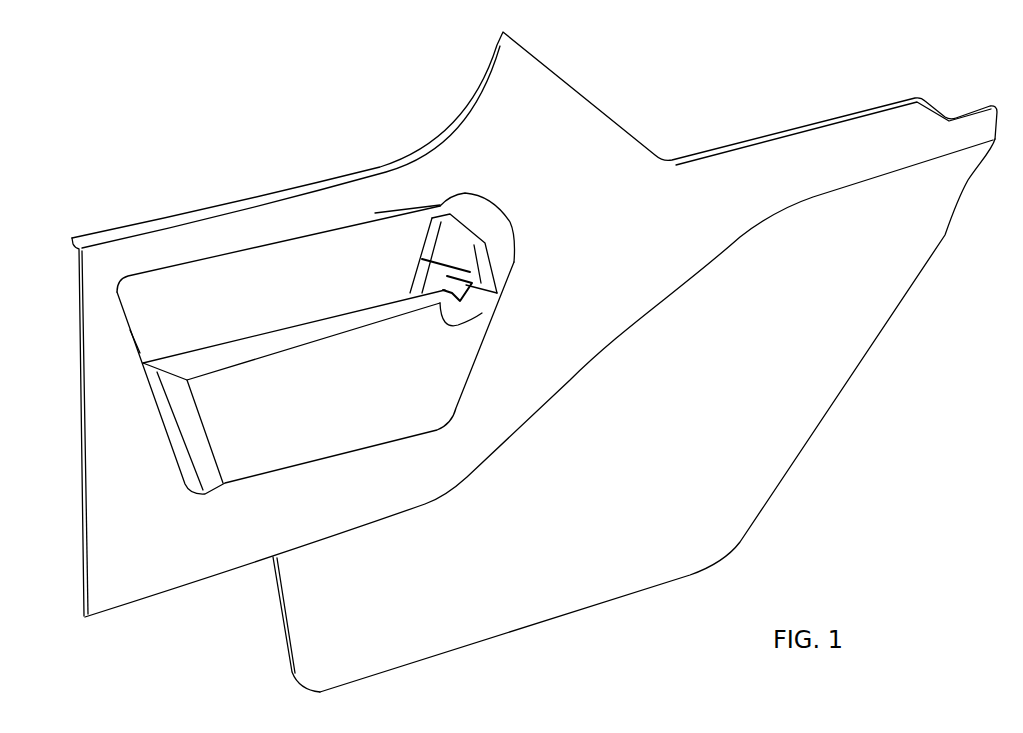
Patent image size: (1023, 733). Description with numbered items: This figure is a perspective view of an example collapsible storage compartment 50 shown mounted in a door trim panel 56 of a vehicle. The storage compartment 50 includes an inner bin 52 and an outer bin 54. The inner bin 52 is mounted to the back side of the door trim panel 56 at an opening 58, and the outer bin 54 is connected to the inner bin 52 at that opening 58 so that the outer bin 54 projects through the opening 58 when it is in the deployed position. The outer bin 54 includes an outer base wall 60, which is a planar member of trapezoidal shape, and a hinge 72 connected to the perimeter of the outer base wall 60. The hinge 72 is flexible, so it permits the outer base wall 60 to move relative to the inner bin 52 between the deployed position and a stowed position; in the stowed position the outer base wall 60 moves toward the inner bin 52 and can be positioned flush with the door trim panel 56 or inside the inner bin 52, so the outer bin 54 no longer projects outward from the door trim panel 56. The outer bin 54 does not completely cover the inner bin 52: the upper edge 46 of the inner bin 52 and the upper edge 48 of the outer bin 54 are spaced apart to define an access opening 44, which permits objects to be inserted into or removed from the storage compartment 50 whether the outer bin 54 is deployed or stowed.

The access opening 44 is at (325, 265).
The upper edge of the inner bin 46 is at (185, 263).
The upper edge of the outer bin 48 is at (498, 293).
The collapsible storage compartment 50 is at (268, 260).
The inner bin 52 is at (373, 231).
The outer bin 54 is at (243, 471).
The door trim panel 56 is at (565, 108).
The opening 58 is at (132, 333).
The outer base wall 60 is at (397, 344).
The hinge 72 is at (189, 433).